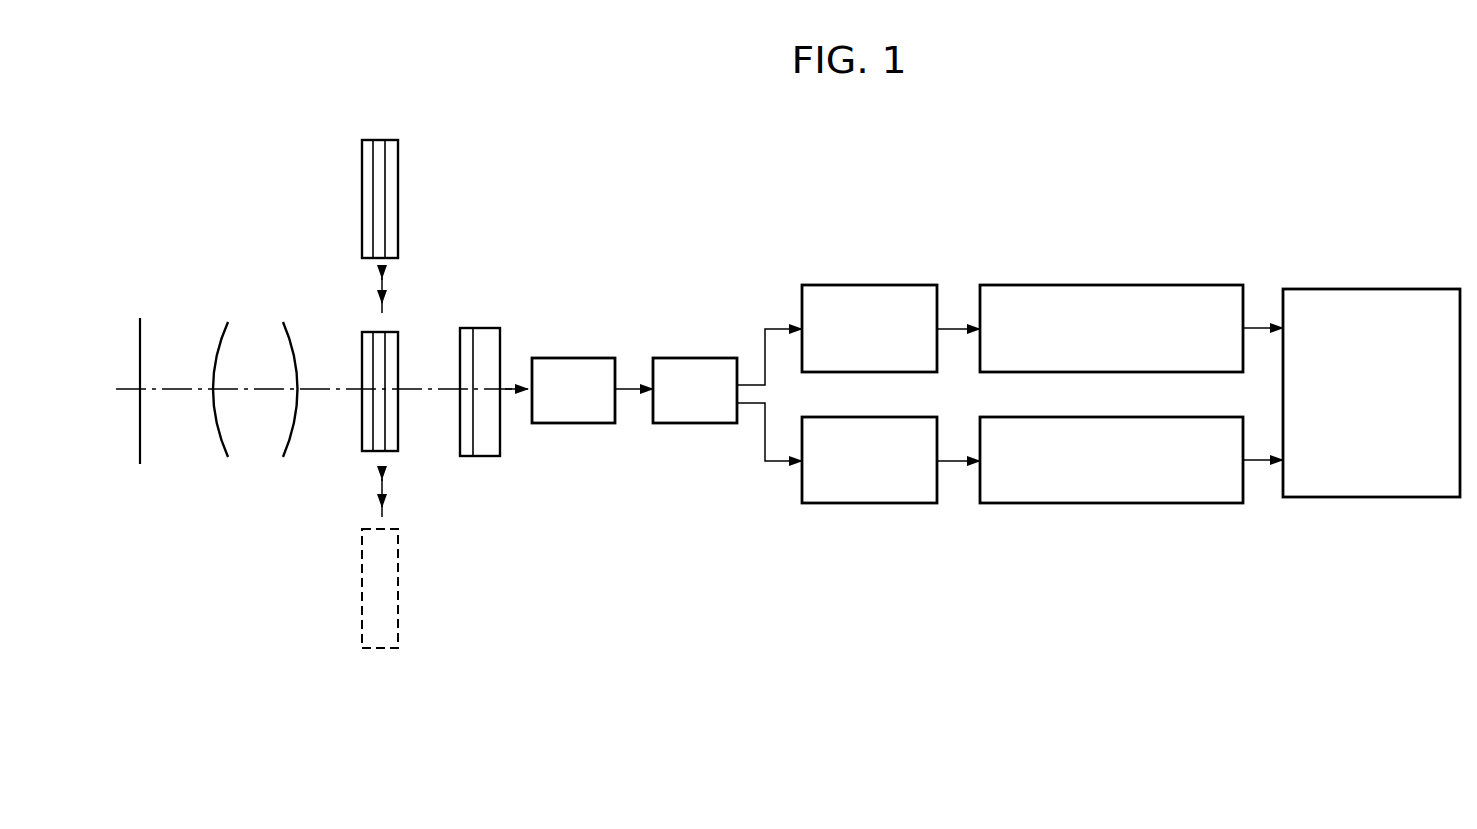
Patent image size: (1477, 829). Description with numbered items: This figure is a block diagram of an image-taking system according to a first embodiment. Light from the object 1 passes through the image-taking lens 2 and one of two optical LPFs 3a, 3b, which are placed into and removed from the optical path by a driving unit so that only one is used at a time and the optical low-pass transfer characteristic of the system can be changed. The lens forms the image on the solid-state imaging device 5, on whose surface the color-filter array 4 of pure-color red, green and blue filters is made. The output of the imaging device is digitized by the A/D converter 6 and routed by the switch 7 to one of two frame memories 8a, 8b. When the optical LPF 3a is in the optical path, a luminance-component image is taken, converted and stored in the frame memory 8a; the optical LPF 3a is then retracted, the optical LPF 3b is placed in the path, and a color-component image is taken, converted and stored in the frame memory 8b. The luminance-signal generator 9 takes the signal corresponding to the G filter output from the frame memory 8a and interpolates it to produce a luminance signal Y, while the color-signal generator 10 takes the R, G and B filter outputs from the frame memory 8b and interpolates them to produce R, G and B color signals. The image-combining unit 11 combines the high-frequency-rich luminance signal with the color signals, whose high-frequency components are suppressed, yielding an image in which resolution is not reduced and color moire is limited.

The object 1 is at (141, 316).
The image-taking lens 2 is at (255, 316).
The optical LPF 3a is at (392, 140).
The optical LPF 3b is at (398, 441).
The color-filter array 4 is at (467, 328).
The solid-state imaging device 5 is at (492, 328).
The A/D converter 6 is at (572, 358).
The switch 7 is at (693, 358).
The frame memory 8a is at (870, 285).
The frame memory 8b is at (870, 503).
The luminance-signal generator 9 is at (1122, 285).
The color-signal generator 10 is at (1118, 503).
The image-combining unit 11 is at (1352, 289).